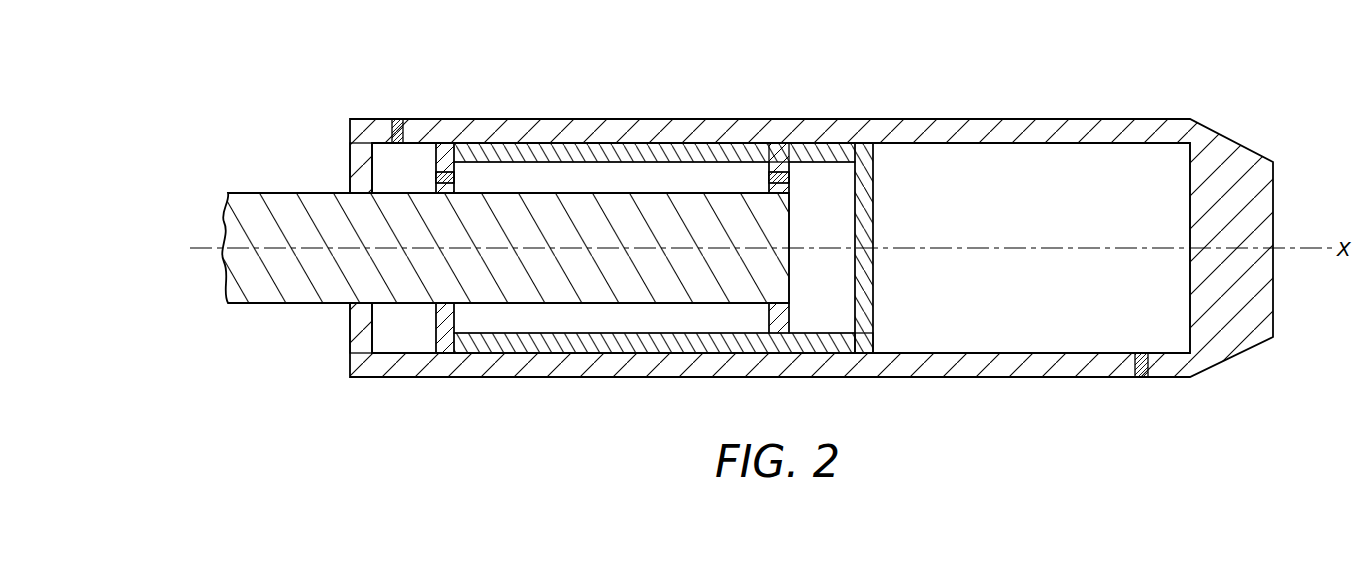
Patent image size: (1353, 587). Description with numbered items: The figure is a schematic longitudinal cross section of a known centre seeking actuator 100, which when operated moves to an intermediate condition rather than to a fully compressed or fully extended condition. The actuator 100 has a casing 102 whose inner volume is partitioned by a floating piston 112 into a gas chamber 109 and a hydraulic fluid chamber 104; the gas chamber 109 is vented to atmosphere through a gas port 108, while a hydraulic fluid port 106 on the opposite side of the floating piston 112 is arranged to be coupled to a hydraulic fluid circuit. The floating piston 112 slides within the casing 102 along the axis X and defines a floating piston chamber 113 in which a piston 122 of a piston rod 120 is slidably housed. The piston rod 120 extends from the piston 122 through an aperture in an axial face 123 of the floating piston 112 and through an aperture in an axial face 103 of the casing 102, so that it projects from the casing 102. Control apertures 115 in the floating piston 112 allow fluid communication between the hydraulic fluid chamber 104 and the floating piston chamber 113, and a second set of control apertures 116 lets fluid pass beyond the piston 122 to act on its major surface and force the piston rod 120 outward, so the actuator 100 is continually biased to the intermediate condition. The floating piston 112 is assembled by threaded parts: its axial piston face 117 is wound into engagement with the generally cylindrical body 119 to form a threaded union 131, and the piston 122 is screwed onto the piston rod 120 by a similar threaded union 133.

The centre seeking actuator 100 is at (1231, 76).
The casing 102 is at (578, 116).
The axial face of the casing 103 is at (357, 340).
The hydraulic fluid chamber 104 is at (385, 342).
The hydraulic fluid port 106 is at (397, 119).
The gas port 108 is at (1141, 375).
The gas chamber 109 is at (1053, 171).
The floating piston 112 is at (845, 141).
The floating piston chamber 113 is at (652, 322).
The control apertures 115 is at (437, 177).
The second set of control apertures 116 is at (773, 171).
The axial piston face 117 is at (866, 221).
The generally cylindrical body 119 is at (578, 346).
The piston rod 120 is at (240, 192).
The piston 122 is at (788, 322).
The axial face of the floating piston 123 is at (458, 326).
The threaded union 131 is at (867, 335).
The threaded union 133 is at (780, 304).